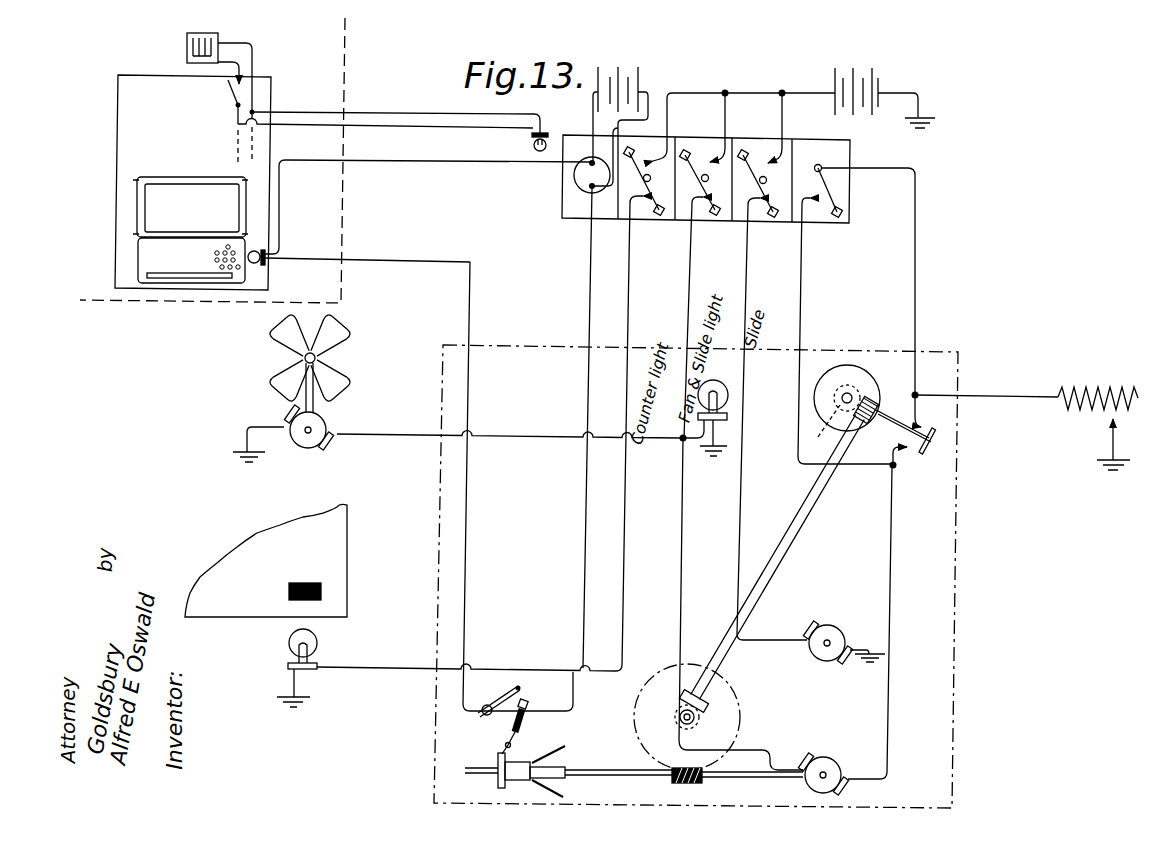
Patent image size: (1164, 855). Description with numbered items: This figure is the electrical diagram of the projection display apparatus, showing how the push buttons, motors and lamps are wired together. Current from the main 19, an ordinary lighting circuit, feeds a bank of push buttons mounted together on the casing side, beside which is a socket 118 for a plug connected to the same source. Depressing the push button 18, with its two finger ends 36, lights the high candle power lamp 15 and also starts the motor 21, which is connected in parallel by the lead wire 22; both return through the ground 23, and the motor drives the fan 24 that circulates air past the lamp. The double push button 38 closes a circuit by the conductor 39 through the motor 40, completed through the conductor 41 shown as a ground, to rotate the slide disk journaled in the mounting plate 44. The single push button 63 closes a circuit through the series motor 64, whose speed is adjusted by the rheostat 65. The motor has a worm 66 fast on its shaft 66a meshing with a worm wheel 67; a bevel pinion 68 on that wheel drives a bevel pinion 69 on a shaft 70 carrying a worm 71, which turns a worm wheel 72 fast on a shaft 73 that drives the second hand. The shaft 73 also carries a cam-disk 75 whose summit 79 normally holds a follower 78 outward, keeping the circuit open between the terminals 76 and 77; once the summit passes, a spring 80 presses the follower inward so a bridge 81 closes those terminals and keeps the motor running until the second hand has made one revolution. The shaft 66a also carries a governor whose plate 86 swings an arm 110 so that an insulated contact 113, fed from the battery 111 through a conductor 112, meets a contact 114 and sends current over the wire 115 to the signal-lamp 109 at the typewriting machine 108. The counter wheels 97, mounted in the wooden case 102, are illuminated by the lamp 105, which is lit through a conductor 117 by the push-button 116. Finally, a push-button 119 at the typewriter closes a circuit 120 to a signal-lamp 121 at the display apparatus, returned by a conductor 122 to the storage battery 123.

The high candle power lamp 15 is at (715, 383).
The push button 18 is at (703, 156).
The main 19 is at (905, 90).
The motor 21 is at (321, 425).
The lead wire 22 is at (688, 263).
The ground 23 is at (255, 462).
The fan 24 is at (337, 328).
The finger ends 36 is at (684, 150).
The double push button 38 is at (745, 150).
The conductor 39 is at (740, 489).
The motor 40 is at (838, 631).
The conductor 41 is at (870, 646).
The mounting plate 44 is at (952, 642).
The single push button 63 is at (833, 216).
The series motor 64 is at (828, 762).
The rheostat 65 is at (1098, 387).
The worm 66 is at (698, 781).
The motor shaft 66a is at (755, 778).
The worm wheel 67 is at (739, 710).
The bevel pinion 68 is at (697, 725).
The bevel pinion 69 is at (694, 692).
The shaft 70 is at (770, 574).
The worm 71 is at (873, 400).
The worm wheel 72 is at (820, 428).
The shaft 73 is at (842, 394).
The cam-disk 75 is at (848, 372).
The terminal 76 is at (924, 428).
The terminal 77 is at (909, 456).
The follower 78 is at (891, 426).
The summit 79 is at (877, 408).
The spring 80 is at (1108, 468).
The bridge 81 is at (931, 434).
The plate 86 is at (498, 761).
The wheels 97 is at (288, 594).
The wooden case 102 is at (235, 611).
The lamp 105 is at (317, 642).
The typewriting machine 108 is at (193, 182).
The signal-lamp 109 is at (262, 265).
The arm 110 is at (516, 730).
The battery 111 is at (638, 74).
The conductor 112 is at (578, 578).
The insulated contact 113 is at (527, 702).
The contact 114 is at (518, 688).
The wire 115 is at (467, 598).
The push-button 116 is at (659, 215).
The conductor 117 is at (625, 384).
The socket 118 is at (587, 191).
The push-button 119 is at (229, 94).
The circuit 120 is at (424, 126).
The signal-lamp 121 is at (531, 143).
The conductor 122 is at (415, 112).
The storage battery 123 is at (187, 52).